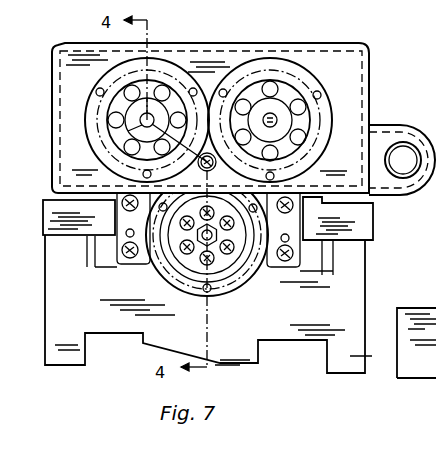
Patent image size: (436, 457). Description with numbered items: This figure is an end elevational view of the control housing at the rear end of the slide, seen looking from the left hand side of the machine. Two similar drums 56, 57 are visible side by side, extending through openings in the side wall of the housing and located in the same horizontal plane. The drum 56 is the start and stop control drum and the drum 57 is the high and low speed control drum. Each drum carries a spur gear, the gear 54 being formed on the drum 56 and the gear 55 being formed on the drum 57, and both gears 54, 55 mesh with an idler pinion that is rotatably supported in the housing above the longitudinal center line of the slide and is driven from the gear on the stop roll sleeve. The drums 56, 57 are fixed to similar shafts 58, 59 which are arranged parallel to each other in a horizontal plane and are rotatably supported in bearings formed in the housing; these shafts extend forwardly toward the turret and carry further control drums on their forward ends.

The spur gear 54 is at (103, 82).
The start and stop control drum 56 is at (120, 84).
The shaft 58 is at (140, 126).
The spur gear 55 is at (310, 88).
The high and low speed control drum 57 is at (280, 82).
The shaft 59 is at (277, 120).